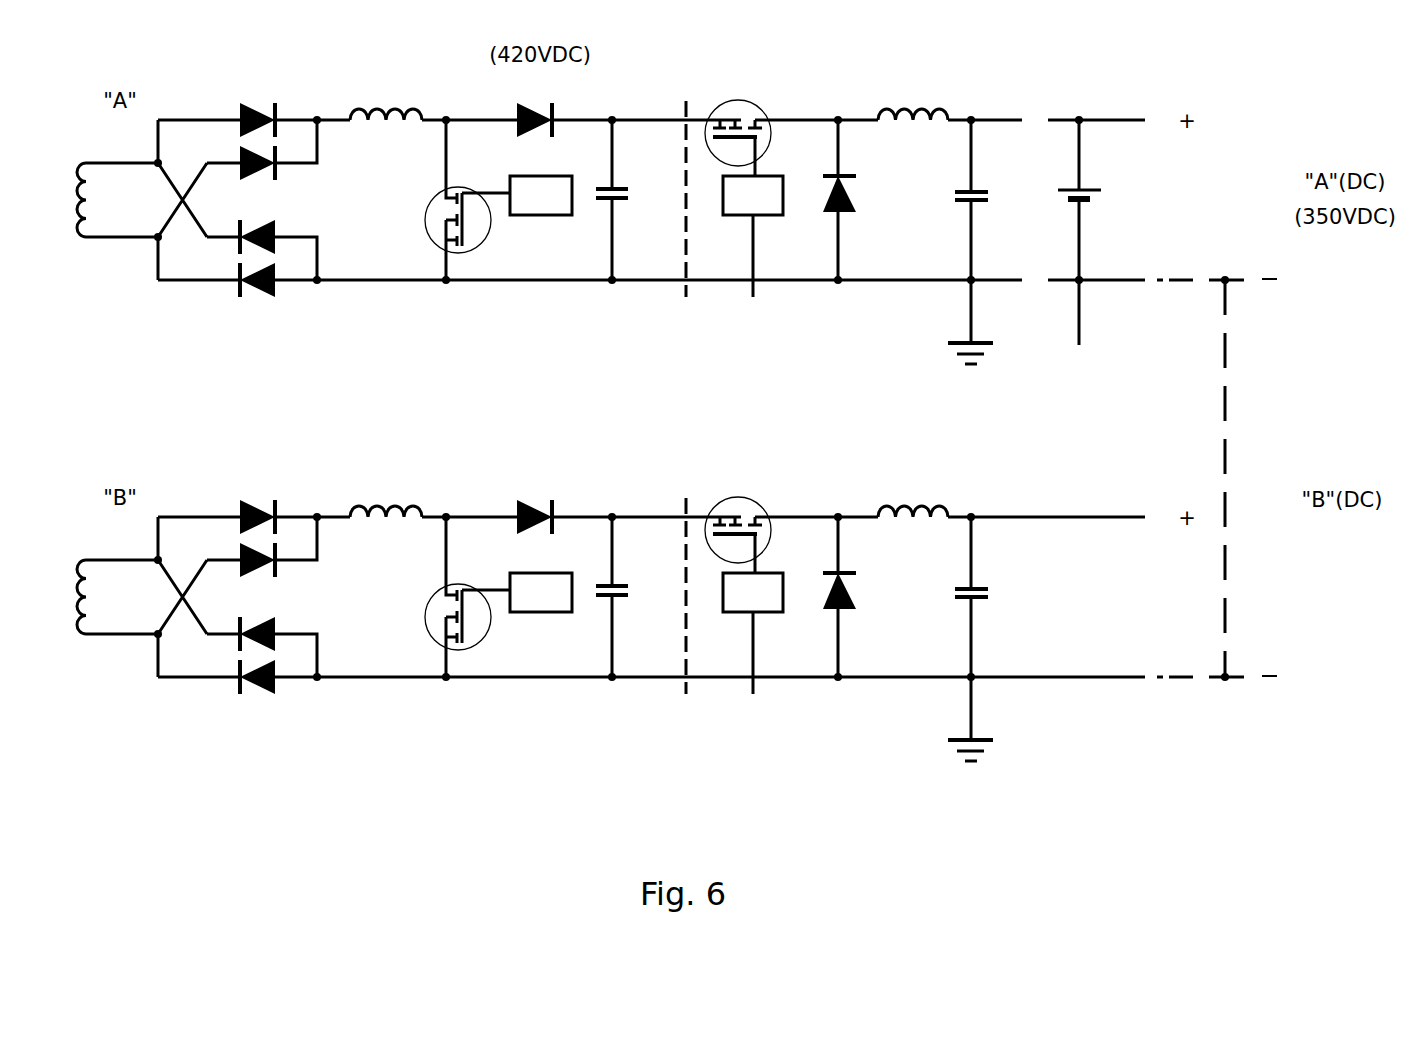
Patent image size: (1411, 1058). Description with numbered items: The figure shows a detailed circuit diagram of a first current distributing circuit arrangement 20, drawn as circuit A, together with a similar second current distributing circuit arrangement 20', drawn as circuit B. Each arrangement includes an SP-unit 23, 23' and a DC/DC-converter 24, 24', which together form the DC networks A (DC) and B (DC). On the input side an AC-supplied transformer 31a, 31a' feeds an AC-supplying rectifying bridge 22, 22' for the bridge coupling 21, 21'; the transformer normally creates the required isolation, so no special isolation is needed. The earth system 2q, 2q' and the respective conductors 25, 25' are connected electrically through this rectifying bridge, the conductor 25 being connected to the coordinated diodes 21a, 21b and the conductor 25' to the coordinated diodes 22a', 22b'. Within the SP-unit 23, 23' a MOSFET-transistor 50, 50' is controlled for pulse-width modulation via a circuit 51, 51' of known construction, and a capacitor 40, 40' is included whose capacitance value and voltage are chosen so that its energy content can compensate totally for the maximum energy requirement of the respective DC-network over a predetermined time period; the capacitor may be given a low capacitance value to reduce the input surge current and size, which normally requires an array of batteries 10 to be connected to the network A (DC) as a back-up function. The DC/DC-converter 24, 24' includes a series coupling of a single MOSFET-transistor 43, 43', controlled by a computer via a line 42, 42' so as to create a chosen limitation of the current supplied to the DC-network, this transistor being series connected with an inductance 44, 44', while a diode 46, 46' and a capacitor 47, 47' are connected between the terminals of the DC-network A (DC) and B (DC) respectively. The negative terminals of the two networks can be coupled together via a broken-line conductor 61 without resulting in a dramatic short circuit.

The array of batteries 10 is at (1088, 212).
The circuit arrangement 20 is at (572, 104).
The bridge coupling 21 is at (164, 211).
The diode 21a is at (285, 224).
The diode 21b is at (266, 305).
The rectifying bridge 22 is at (237, 125).
The SP-unit 23 is at (386, 95).
The DC/DC-converter 24 is at (816, 95).
The conductor 25 is at (710, 301).
The earth system 2q is at (950, 326).
The transformer 31a is at (97, 200).
The capacitor 40 is at (630, 200).
The line 42 is at (736, 248).
The MOSFET-transistor 43 is at (758, 104).
The inductance 44 is at (917, 76).
The diode 46 is at (857, 200).
The capacitor 47 is at (989, 200).
The MOSFET-transistor 50 is at (435, 200).
The circuit 51 is at (517, 209).
The interconnecting line 61 is at (1229, 489).
The circuit arrangement 20' is at (575, 501).
The bridge coupling 21' is at (163, 608).
The rectifying bridge 22' is at (237, 522).
The diode 22a' is at (275, 624).
The diode 22b' is at (216, 702).
The SP-unit 23' is at (386, 492).
The DC/DC-converter 24' is at (816, 492).
The conductor 25' is at (710, 698).
The ground 2q' is at (950, 723).
The transformer secondary winding 31a' is at (96, 597).
The capacitor 40' is at (633, 597).
The line 42' is at (736, 645).
The MOSFET-transistor 43' is at (761, 501).
The inductance 44' is at (920, 473).
The diode 46' is at (860, 597).
The capacitor 47' is at (992, 597).
The MOSFET-transistor 50' is at (435, 597).
The circuit 51' is at (517, 606).